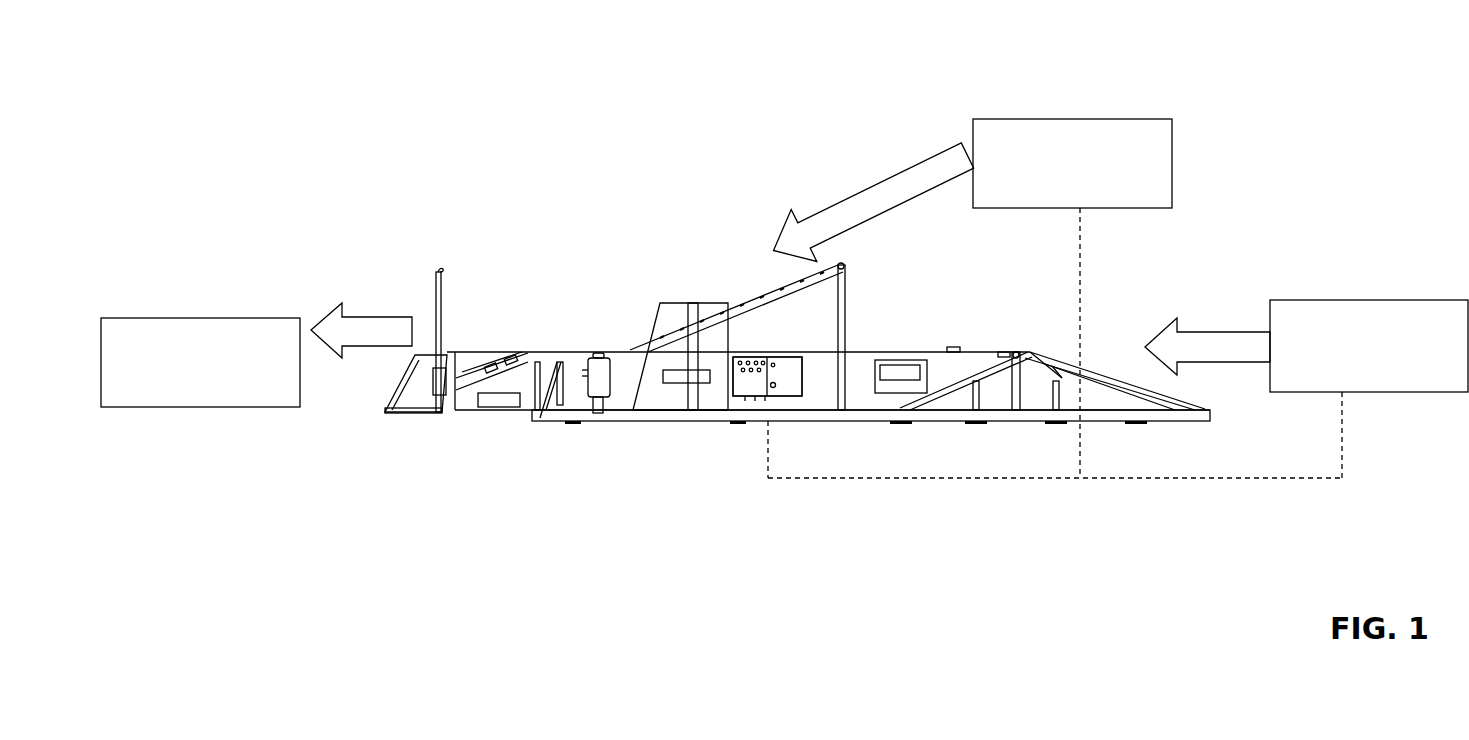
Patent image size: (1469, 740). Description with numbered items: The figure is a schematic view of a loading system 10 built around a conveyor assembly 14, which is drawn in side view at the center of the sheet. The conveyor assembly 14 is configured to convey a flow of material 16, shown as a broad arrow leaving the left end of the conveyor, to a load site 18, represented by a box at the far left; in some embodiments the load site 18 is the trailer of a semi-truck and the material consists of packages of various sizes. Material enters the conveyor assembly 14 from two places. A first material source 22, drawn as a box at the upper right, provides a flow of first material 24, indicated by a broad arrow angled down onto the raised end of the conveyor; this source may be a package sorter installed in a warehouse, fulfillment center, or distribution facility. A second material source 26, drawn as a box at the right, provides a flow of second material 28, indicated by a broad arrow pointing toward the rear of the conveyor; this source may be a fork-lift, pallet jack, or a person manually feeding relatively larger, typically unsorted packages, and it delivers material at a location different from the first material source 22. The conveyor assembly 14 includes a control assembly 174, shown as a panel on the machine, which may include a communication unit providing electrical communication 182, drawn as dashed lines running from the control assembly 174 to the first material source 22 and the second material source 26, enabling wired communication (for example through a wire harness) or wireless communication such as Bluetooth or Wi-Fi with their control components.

The loading system 10 is at (330, 114).
The conveyor assembly 14 is at (612, 257).
The flow of material 16 is at (370, 318).
The load site 18 is at (213, 318).
The first material source 22 is at (1070, 119).
The flow of first material 24 is at (862, 188).
The second material source 26 is at (1350, 300).
The flow of second material 28 is at (1225, 332).
The control assembly 174 is at (733, 468).
The electrical communication 182 is at (985, 480).